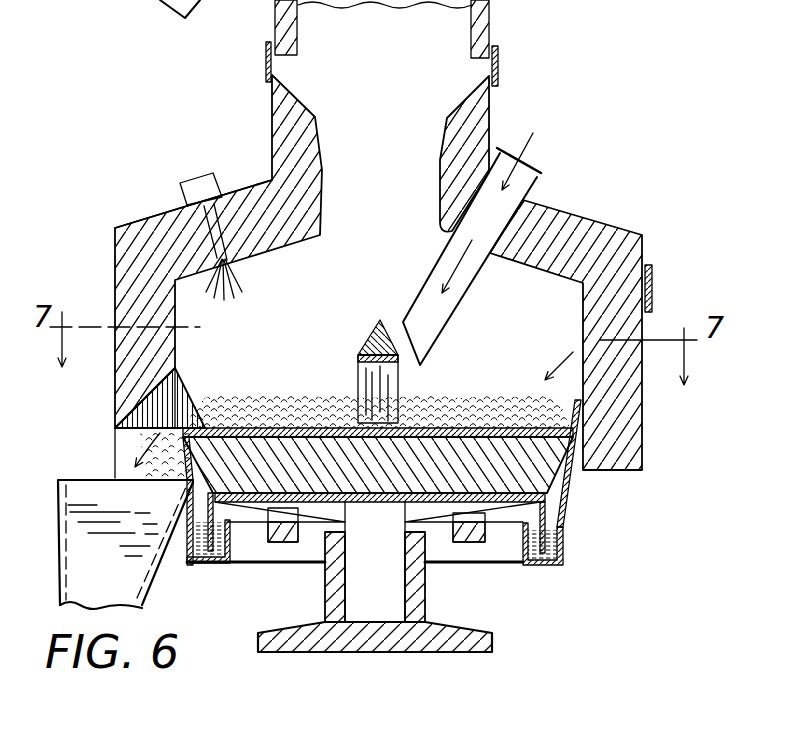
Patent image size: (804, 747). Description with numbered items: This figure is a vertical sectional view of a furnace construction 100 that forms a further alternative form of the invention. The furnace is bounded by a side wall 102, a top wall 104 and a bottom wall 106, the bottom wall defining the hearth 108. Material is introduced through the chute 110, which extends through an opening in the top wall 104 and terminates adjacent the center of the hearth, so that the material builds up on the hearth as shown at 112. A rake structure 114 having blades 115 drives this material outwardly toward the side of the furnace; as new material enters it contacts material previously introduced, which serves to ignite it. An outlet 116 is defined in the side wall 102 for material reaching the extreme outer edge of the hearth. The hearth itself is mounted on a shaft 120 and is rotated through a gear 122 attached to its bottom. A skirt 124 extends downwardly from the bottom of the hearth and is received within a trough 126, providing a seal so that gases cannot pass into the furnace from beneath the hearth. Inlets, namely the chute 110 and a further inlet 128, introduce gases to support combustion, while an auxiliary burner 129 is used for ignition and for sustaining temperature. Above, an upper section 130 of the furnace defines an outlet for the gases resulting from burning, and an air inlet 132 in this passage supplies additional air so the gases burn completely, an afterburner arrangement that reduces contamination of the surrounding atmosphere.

The furnace construction 100 is at (101, 113).
The side wall 102 is at (131, 292).
The top wall 104 is at (153, 217).
The bottom wall 106 is at (493, 470).
The hearth 108 is at (318, 428).
The chute 110 is at (428, 288).
The material built up on the hearth 112 is at (249, 400).
The rake structure 114 is at (373, 337).
The blades 115 is at (367, 377).
The outlet 116 is at (147, 418).
The shaft 120 is at (370, 585).
The gear 122 is at (477, 543).
The skirt 124 is at (563, 520).
The trough 126 is at (563, 548).
The inlet 128 is at (200, 182).
The auxiliary burner 129 is at (653, 283).
The upper section 130 is at (477, 105).
The air inlet 132 is at (283, 65).